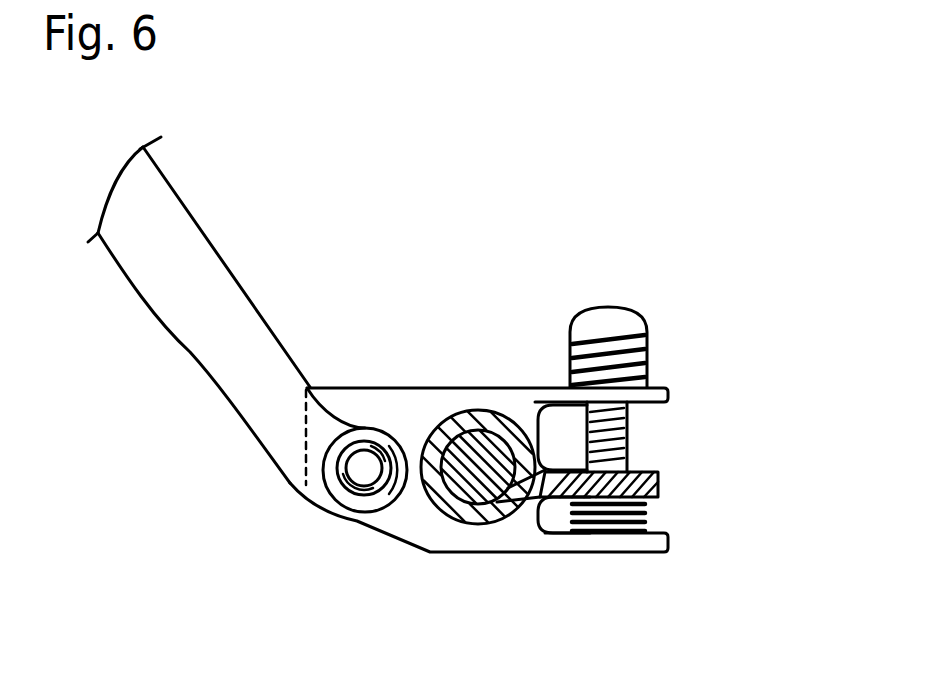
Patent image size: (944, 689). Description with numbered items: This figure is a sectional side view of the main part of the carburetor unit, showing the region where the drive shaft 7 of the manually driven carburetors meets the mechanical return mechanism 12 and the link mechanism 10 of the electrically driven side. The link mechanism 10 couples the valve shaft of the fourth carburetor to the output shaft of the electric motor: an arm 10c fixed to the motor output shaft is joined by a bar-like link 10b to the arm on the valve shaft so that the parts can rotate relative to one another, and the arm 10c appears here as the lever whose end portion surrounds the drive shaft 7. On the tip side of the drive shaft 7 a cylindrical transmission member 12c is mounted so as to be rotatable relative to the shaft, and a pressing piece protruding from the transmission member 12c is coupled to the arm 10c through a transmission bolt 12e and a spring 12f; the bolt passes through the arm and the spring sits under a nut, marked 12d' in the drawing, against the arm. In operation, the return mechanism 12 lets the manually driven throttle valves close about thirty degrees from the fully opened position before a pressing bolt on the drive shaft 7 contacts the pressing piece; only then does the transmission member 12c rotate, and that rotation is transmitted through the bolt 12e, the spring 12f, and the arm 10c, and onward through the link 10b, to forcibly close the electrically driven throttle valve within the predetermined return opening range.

The link mechanism 10 is at (192, 187).
The bar-like link 10b is at (203, 283).
The arm 10c is at (372, 387).
The drive shaft 7 is at (510, 433).
The return mechanism 12 is at (662, 225).
The transmission member 12c is at (482, 523).
The nut 12d' is at (689, 459).
The transmission bolt 12e is at (645, 308).
The spring 12f is at (647, 517).